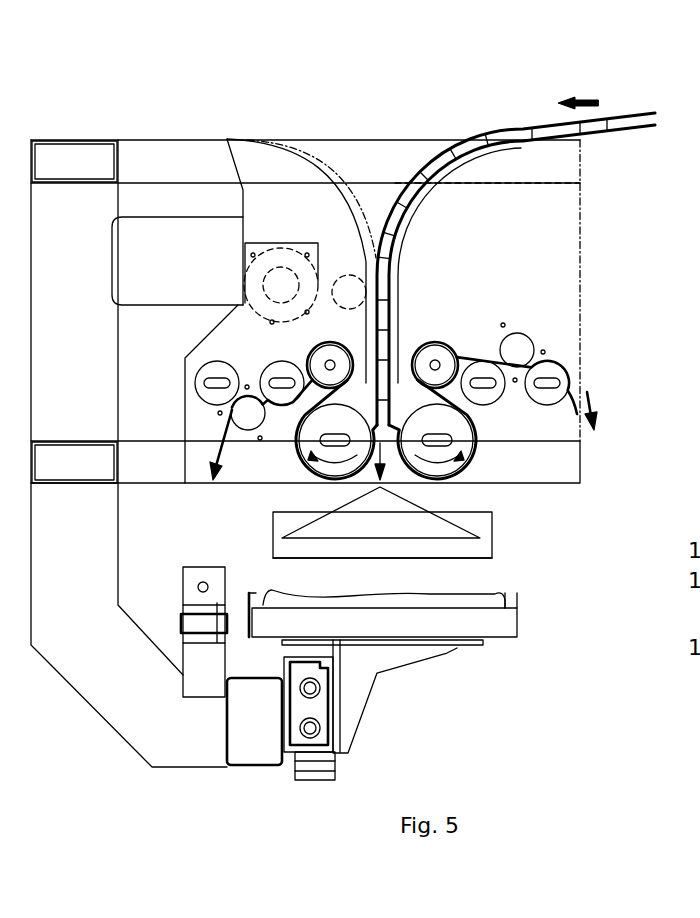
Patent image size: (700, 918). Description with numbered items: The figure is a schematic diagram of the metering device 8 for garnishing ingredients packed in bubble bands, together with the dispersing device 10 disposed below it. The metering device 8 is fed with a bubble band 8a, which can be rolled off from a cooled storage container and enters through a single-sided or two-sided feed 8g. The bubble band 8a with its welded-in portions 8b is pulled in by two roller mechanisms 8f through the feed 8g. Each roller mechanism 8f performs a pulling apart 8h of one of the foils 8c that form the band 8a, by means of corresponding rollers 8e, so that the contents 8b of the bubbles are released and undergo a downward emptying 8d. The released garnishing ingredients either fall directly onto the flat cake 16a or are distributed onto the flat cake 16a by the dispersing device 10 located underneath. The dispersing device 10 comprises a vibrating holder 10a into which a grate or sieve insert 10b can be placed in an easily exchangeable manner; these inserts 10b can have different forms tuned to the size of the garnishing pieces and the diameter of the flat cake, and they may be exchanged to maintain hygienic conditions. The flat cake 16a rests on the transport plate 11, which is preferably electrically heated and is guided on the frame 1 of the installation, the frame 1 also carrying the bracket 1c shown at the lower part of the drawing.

The metering device 8 is at (217, 132).
The bubble band 8a is at (590, 128).
The welded-in portions 8b is at (627, 123).
The foils 8c is at (193, 442).
The downward emptying 8d is at (317, 485).
The rollers 8e is at (458, 433).
The roller mechanisms 8f is at (523, 343).
The feed 8g is at (308, 165).
The pulling apart 8h is at (473, 460).
The dispersing device 10 is at (505, 535).
The vibrating holder 10a is at (492, 557).
The grate or sieve insert 10b is at (390, 503).
The transport plate 11 is at (487, 623).
The flat cake 16a is at (410, 598).
The frame 1 is at (252, 767).
The bracket 1c is at (202, 767).